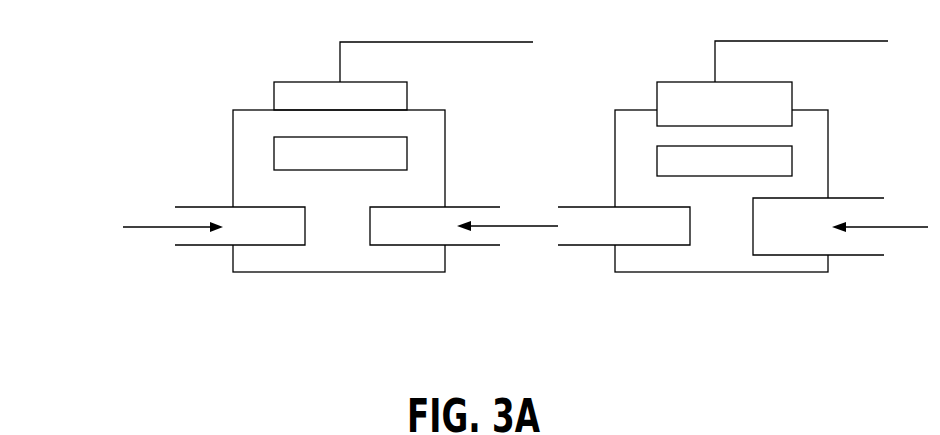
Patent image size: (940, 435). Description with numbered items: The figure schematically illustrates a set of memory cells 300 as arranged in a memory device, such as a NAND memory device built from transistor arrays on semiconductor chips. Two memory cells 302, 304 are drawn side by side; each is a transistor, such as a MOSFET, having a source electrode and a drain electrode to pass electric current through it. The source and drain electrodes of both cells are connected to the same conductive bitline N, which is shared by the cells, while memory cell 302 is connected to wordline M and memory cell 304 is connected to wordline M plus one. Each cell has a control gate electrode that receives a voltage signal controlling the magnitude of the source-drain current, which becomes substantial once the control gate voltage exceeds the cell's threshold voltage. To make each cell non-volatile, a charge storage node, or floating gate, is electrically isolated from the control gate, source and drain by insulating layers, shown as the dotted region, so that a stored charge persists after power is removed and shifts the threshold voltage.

The memory cell array 300 is at (206, 74).
The memory cell 302 is at (328, 181).
The memory cell 304 is at (743, 182).